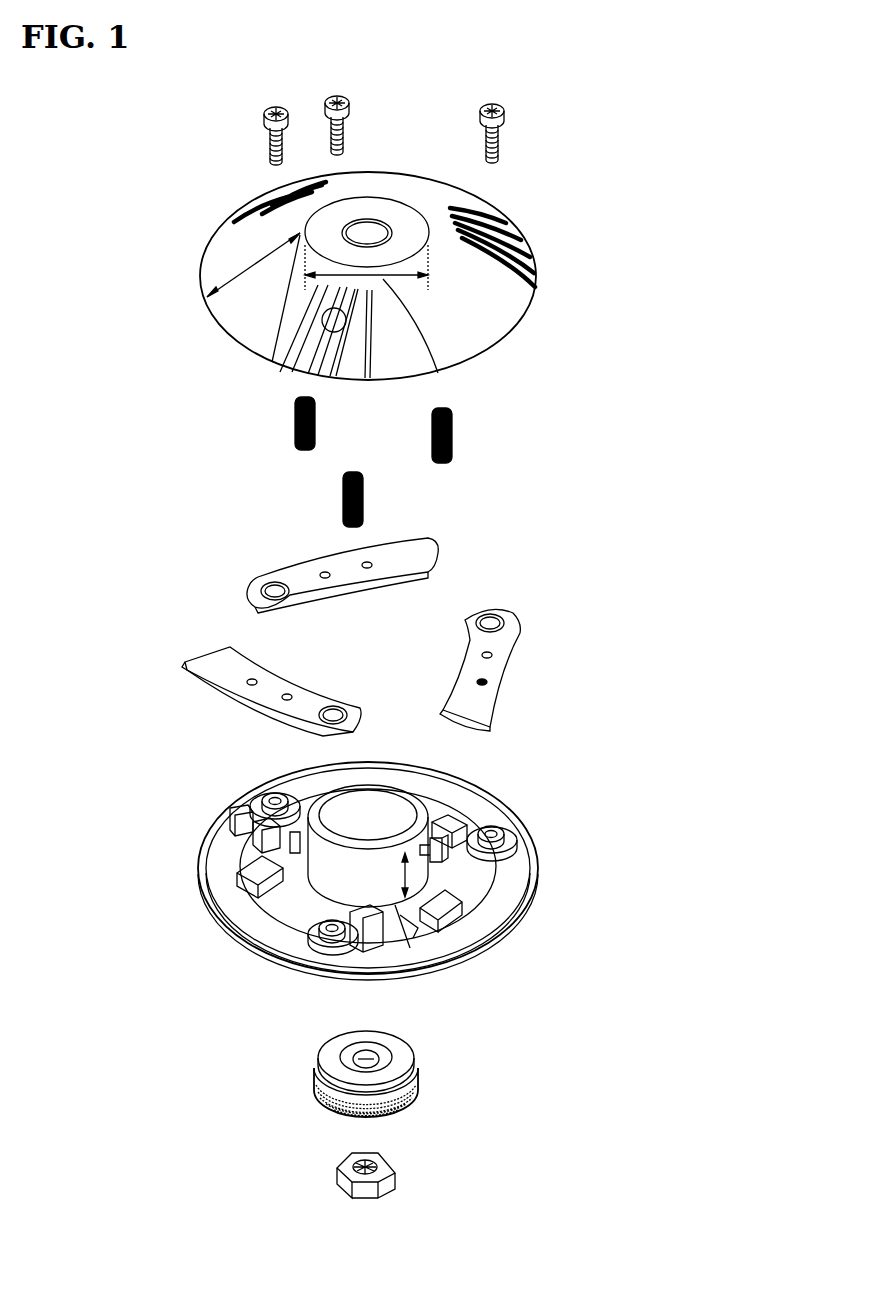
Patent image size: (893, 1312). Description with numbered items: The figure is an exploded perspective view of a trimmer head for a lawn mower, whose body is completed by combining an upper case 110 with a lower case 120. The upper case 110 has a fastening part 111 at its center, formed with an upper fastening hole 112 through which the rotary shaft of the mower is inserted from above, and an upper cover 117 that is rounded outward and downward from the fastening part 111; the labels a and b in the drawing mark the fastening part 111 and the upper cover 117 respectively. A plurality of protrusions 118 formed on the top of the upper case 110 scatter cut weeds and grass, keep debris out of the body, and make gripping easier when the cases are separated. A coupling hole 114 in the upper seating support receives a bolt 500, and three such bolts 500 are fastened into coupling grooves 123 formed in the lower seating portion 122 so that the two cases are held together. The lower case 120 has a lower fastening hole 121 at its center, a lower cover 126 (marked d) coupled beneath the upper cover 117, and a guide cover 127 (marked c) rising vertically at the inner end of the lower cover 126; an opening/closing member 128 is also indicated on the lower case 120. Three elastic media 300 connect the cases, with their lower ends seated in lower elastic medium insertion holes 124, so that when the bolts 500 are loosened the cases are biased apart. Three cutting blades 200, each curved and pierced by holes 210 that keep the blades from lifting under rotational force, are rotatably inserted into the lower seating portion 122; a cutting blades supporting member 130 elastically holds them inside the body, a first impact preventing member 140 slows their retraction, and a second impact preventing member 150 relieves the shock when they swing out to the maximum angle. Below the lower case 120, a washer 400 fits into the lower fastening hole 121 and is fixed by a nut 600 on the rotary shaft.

The upper case 110 is at (517, 300).
The fastening part 111 is at (436, 370).
The upper fastening hole 112 is at (370, 233).
The coupling hole 114 is at (497, 217).
The upper cover 117 is at (253, 261).
The protrusion 118 is at (318, 360).
The lower case 120 is at (218, 800).
The lower fastening hole 121 is at (347, 813).
The lower seating portion 122 is at (503, 840).
The coupling groove 123 is at (273, 795).
The lower elastic medium insertion hole 124 is at (443, 827).
The lower cover 126 is at (447, 957).
The guide cover 127 is at (374, 875).
The opening/closing member 128 is at (407, 943).
The cutting blades supporting member 130 is at (470, 947).
The first impact preventing member 140 is at (303, 913).
The second impact preventing member 150 is at (257, 873).
The cutting blades 200 is at (498, 647).
The hole 210 is at (488, 679).
The elastic medium 300 is at (452, 447).
The washer 400 is at (397, 1053).
The bolt 500 is at (352, 124).
The nut 600 is at (383, 1167).